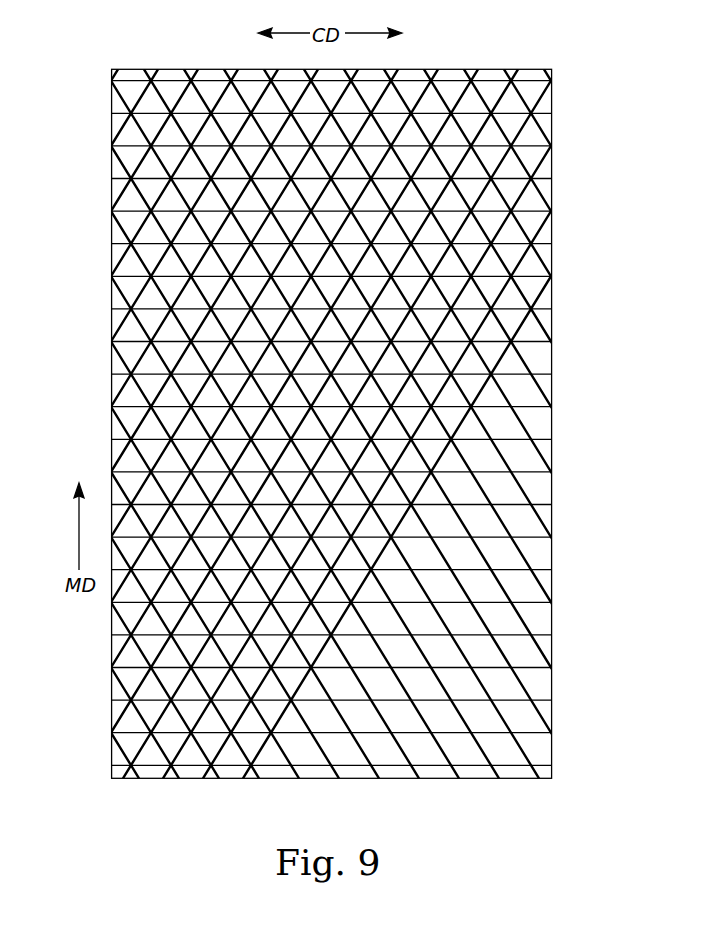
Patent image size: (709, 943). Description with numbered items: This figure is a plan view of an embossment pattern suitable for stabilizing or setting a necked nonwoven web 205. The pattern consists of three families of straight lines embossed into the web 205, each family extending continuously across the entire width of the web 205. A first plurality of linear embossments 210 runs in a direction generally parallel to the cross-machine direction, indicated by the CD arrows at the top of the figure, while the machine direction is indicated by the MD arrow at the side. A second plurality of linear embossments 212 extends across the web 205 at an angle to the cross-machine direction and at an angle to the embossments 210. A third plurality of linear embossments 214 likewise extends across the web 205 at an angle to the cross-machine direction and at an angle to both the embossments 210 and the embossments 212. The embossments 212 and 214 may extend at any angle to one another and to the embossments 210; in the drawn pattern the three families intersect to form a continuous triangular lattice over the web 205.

The web 205 is at (354, 418).
The linear embossments 210 is at (530, 212).
The linear embossments 212 is at (522, 293).
The linear embossments 214 is at (522, 390).